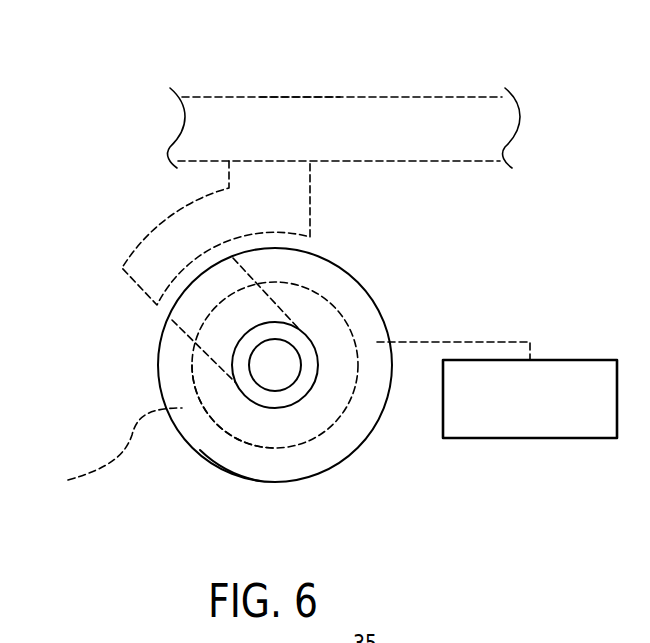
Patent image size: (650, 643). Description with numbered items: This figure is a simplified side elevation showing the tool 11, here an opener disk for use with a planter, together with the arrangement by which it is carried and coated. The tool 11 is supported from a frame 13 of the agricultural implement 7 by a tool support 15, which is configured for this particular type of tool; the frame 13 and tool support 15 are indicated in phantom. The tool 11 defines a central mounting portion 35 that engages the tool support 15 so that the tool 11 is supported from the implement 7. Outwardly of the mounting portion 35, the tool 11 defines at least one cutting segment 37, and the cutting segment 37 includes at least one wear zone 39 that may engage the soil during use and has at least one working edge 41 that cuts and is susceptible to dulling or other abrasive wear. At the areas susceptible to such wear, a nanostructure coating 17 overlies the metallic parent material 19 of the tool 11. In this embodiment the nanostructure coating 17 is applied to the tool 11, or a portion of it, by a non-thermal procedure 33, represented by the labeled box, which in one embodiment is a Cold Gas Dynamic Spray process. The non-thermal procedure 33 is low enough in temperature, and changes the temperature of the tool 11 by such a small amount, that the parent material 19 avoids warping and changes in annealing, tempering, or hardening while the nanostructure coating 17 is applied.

The agricultural implement 7 is at (457, 76).
The tool 11 is at (112, 415).
The frame 13 is at (289, 103).
The tool support 15 is at (243, 177).
The nanostructure coating 17 is at (347, 293).
The parent material 19 is at (295, 297).
The non-thermal procedure 33 is at (529, 439).
The mounting portion 35 is at (320, 338).
The cutting segment 37 is at (210, 443).
The wear zone 39 is at (109, 453).
The working edge 41 is at (229, 473).